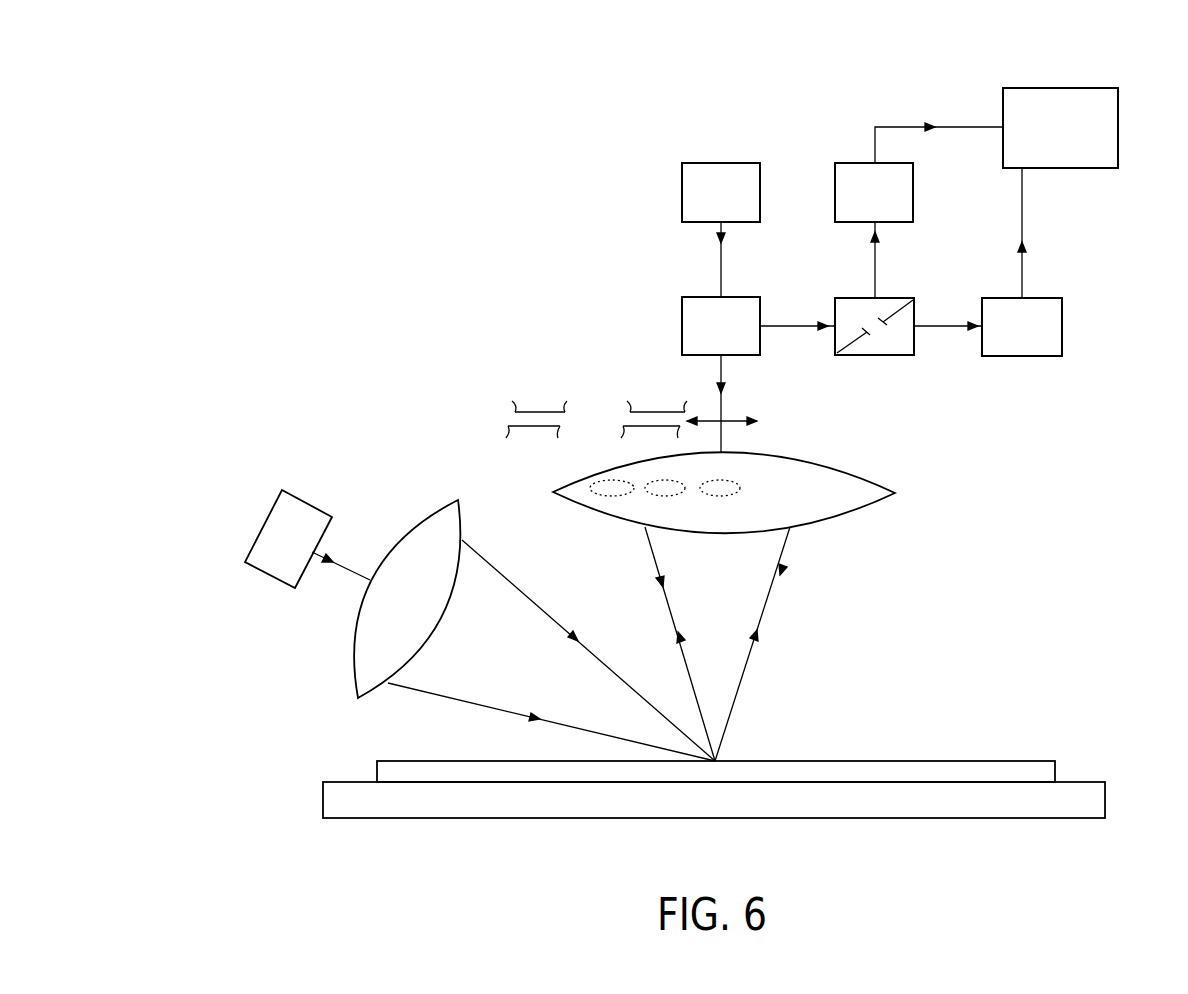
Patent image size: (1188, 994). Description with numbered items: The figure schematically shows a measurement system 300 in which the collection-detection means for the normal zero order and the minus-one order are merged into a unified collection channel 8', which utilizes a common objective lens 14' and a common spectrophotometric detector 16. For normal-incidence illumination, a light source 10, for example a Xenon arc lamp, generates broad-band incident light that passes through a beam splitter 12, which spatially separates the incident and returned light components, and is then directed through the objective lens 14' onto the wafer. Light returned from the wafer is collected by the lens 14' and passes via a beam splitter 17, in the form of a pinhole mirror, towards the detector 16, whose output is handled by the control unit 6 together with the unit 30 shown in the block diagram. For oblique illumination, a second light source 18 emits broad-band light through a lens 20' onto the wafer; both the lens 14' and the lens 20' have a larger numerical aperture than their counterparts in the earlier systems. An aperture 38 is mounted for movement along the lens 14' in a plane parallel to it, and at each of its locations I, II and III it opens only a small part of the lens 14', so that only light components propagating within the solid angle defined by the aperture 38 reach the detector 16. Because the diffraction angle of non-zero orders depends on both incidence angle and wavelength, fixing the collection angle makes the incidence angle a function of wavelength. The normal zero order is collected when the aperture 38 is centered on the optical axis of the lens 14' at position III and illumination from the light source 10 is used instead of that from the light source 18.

The measurement system 300 is at (313, 225).
The unified collection channel 8' is at (443, 379).
The light source 10 is at (720, 163).
The beam splitter 12 is at (682, 321).
The beam splitter 17 is at (875, 356).
The detector 30 is at (859, 163).
The control unit 6 is at (1063, 88).
The spectrophotometric detector 16 is at (1063, 325).
The aperture 38 is at (660, 412).
The common objective lens 14' is at (730, 508).
The aperture location I is at (617, 480).
The aperture location II is at (662, 497).
The aperture location III is at (737, 483).
The light source 18 is at (258, 532).
The lens 20' is at (368, 599).